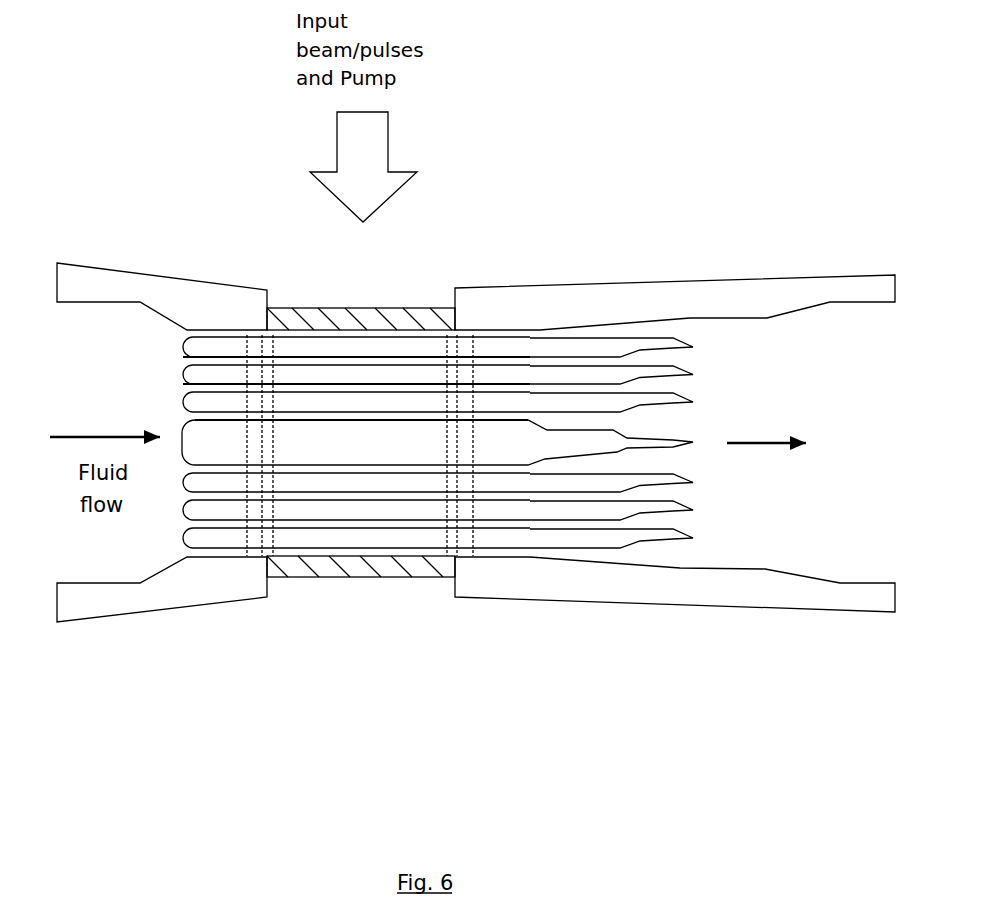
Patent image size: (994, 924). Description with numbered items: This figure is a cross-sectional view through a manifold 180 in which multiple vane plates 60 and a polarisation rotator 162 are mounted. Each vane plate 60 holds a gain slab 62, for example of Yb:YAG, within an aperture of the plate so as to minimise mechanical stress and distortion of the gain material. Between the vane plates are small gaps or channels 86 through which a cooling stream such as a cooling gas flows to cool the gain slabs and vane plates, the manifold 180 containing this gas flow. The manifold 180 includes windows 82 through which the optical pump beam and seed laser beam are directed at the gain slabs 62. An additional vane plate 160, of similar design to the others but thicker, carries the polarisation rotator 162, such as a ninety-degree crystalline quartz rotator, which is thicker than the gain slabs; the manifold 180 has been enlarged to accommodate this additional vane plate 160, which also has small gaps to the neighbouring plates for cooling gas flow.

The vane plate 60 is at (210, 548).
The gain slab 62 is at (365, 553).
The window 82 is at (323, 580).
The gap or channel 86 is at (234, 538).
The additional vane plate 160 is at (173, 421).
The polarisation rotator 162 is at (292, 433).
The manifold 180 is at (511, 275).